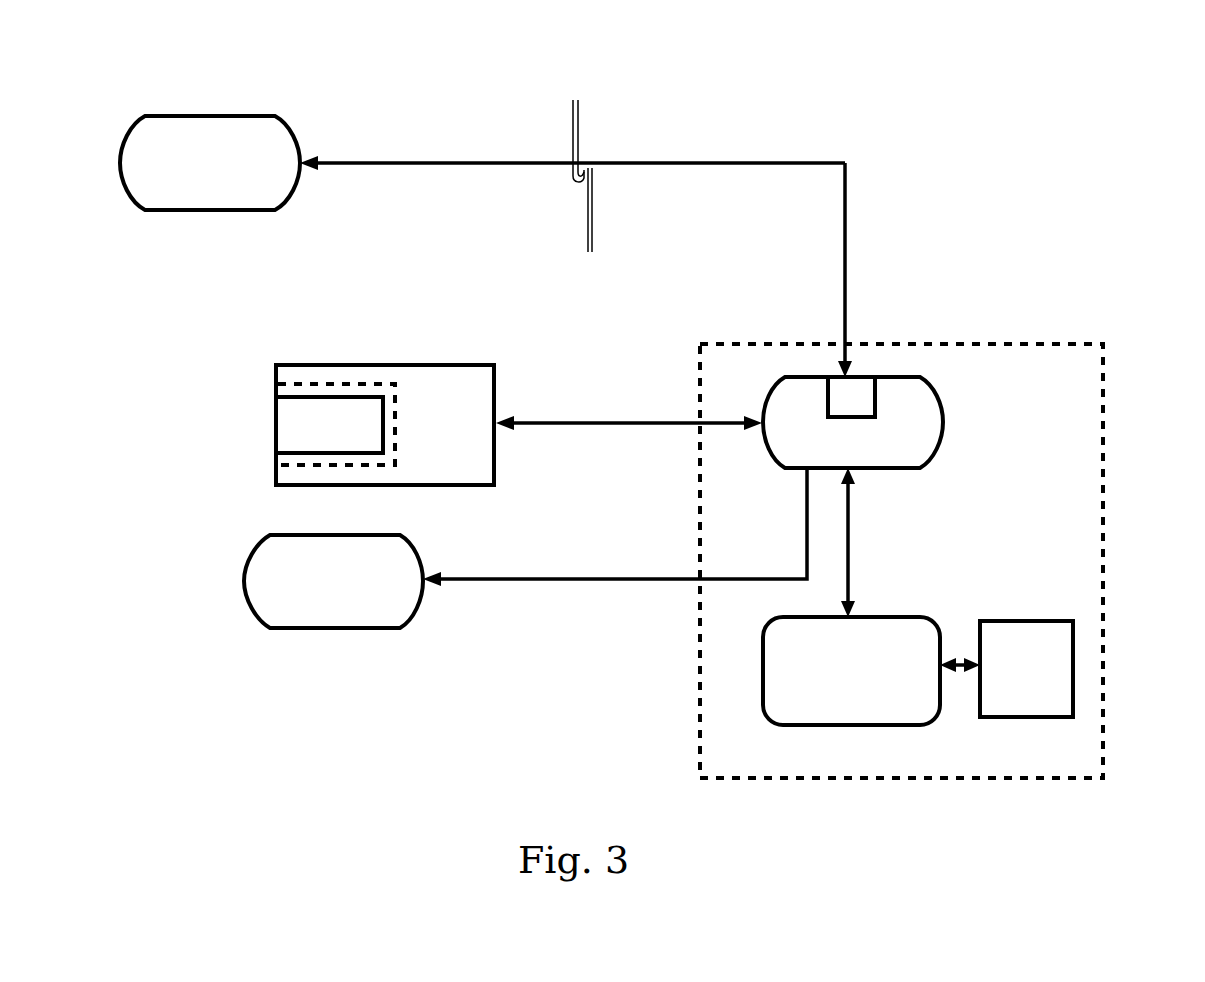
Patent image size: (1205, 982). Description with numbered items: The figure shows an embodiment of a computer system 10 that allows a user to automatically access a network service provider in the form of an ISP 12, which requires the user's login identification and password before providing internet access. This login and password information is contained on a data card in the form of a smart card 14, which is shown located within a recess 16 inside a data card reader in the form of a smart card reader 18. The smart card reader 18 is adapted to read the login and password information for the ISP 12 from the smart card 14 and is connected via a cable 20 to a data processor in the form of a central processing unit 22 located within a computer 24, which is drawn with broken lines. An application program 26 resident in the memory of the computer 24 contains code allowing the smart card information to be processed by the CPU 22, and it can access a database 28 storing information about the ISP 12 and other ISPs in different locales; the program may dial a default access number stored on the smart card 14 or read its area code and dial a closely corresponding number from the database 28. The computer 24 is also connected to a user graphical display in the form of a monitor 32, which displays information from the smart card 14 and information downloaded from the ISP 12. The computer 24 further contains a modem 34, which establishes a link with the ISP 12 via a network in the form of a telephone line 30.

The computer system 10 is at (978, 156).
The ISP 12 is at (210, 163).
The smart card 14 is at (290, 417).
The recess 16 is at (393, 408).
The smart card reader 18 is at (328, 365).
The cable 20 is at (578, 423).
The central processing unit 22 is at (853, 414).
The computer 24 is at (1103, 473).
The application program 26 is at (851, 596).
The database 28 is at (1006, 669).
The telephone line 30 is at (673, 163).
The monitor 32 is at (525, 548).
The modem 34 is at (851, 397).